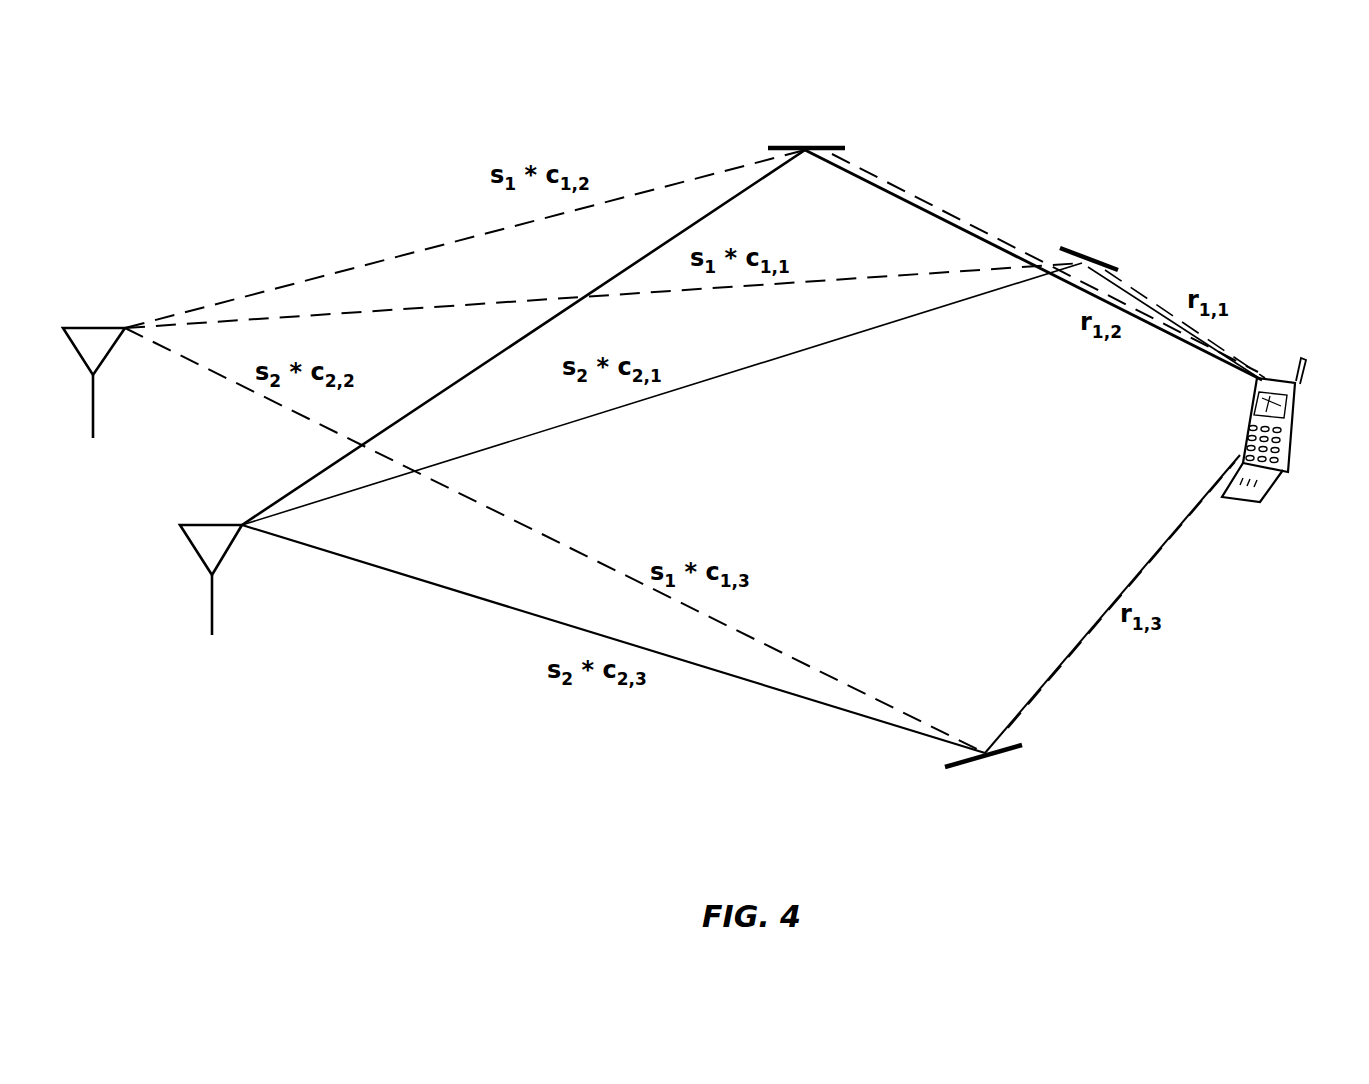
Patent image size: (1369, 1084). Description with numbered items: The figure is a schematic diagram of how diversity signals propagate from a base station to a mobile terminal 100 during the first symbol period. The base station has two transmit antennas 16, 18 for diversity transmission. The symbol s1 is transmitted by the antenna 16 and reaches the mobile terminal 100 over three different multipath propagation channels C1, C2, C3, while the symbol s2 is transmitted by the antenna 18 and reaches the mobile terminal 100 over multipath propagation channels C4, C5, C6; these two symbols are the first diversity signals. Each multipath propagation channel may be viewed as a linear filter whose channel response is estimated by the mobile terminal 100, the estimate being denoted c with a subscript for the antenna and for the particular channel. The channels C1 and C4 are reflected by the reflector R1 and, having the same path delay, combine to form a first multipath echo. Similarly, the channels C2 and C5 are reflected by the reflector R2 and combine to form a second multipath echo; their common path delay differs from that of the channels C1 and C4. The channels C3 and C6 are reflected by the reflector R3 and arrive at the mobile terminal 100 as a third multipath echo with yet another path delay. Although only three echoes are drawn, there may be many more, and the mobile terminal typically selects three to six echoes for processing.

The antenna 16 is at (80, 327).
The antenna 18 is at (200, 525).
The mobile terminal 100 is at (1272, 496).
The reflector R1 is at (1107, 264).
The reflector R2 is at (818, 150).
The reflector R3 is at (994, 754).
The multipath propagation channel C1 is at (850, 278).
The multipath propagation channel C2 is at (442, 245).
The multipath propagation channel C3 is at (792, 658).
The multipath propagation channel C4 is at (857, 335).
The multipath propagation channel C5 is at (660, 248).
The multipath propagation channel C6 is at (813, 702).